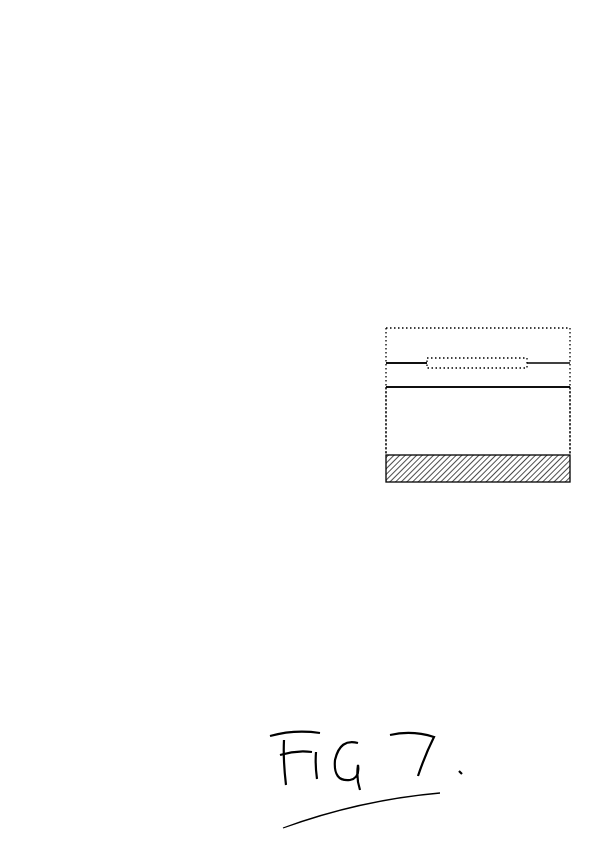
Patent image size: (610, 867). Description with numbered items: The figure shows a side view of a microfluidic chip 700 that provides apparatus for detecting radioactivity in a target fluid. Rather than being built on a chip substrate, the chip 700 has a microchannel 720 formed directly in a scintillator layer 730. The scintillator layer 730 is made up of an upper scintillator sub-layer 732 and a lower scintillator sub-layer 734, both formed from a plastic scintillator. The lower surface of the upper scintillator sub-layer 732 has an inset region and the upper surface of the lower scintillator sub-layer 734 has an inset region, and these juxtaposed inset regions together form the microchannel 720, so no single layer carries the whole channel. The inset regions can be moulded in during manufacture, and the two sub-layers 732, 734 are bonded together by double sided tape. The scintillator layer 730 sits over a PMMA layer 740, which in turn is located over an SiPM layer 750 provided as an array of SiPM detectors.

The microfluidic chip 700 is at (438, 175).
The microchannel 720 is at (440, 356).
The scintillator layer 730 is at (226, 328).
The upper scintillator sub-layer 732 is at (394, 336).
The lower scintillator sub-layer 734 is at (384, 372).
The PMMA layer 740 is at (396, 421).
The SiPM layer 750 is at (384, 464).